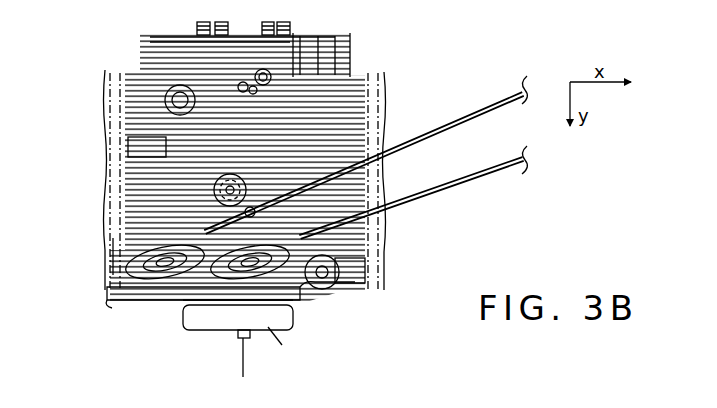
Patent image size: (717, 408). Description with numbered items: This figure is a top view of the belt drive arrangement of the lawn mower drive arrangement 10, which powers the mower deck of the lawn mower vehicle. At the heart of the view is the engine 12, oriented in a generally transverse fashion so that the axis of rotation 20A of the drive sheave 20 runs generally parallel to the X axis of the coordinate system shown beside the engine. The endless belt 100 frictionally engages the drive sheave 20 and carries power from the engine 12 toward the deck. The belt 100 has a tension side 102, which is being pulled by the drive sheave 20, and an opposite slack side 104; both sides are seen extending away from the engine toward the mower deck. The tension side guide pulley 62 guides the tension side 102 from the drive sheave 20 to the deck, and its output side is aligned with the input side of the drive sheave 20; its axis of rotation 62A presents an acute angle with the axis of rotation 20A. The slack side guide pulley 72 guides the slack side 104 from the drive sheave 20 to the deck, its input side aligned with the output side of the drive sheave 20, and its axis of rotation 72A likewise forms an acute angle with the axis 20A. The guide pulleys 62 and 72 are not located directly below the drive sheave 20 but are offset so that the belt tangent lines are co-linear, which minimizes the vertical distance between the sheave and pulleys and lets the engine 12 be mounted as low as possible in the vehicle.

The engine 12 is at (381, 76).
The slack side 104 is at (441, 131).
The tension side 102 is at (437, 201).
The lawn mower drive arrangement 10 is at (550, 182).
The endless belt 100 is at (514, 195).
The axis of rotation 72A is at (118, 252).
The tension side guide pulley 62 is at (137, 230).
The slack side guide pulley 72 is at (112, 290).
The drive sheave 20 is at (297, 302).
The axis of rotation 20A is at (250, 364).
The axis of rotation 62A is at (284, 345).